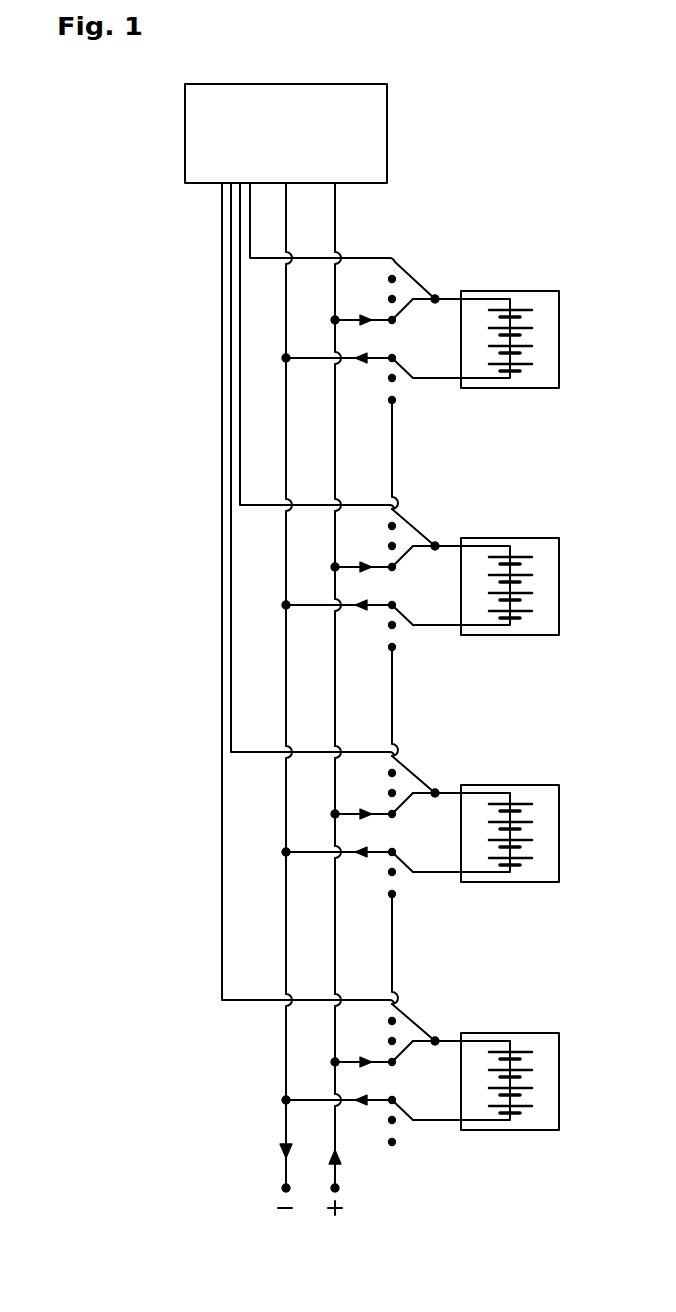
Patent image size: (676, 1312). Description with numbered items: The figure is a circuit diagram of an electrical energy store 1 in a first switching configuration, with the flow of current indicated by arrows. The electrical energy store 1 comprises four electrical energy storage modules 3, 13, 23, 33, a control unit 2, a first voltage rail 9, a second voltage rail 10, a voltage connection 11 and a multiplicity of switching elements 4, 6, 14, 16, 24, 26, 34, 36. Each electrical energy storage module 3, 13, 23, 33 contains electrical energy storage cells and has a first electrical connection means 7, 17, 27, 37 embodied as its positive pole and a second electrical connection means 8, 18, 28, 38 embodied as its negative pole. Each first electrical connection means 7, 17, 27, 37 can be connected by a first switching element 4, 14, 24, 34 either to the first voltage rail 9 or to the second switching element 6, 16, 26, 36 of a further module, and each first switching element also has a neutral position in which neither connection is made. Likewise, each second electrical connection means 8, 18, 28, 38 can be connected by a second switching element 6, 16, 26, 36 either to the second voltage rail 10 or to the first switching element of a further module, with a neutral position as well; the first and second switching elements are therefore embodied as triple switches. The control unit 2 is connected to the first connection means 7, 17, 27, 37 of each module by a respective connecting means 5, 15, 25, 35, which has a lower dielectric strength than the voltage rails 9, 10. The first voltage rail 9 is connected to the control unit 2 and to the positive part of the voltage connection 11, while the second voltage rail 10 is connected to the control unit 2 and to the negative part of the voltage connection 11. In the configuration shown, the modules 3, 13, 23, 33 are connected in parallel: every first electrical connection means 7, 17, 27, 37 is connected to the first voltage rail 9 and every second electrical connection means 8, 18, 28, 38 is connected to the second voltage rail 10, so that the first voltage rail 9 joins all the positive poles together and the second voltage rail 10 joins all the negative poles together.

The electrical energy store 1 is at (413, 71).
The control unit 2 is at (284, 83).
The electrical energy storage module 3 is at (548, 291).
The first switching element 4 is at (426, 276).
The connecting means 5 is at (367, 257).
The second switching element 6 is at (426, 405).
The first electrical connection means 7 is at (443, 298).
The second electrical connection means 8 is at (443, 380).
The first voltage rail 9 is at (335, 1034).
The second voltage rail 10 is at (286, 1080).
The voltage connection 11 is at (240, 1187).
The electrical energy storage module 13 is at (548, 538).
The first switching element 14 is at (426, 523).
The connecting means 15 is at (380, 504).
The second switching element 16 is at (426, 652).
The first electrical connection means 17 is at (443, 545).
The second electrical connection means 18 is at (443, 627).
The electrical energy storage module 23 is at (548, 785).
The first switching element 24 is at (426, 770).
The connecting means 25 is at (380, 751).
The second switching element 26 is at (426, 899).
The first electrical connection means 27 is at (443, 792).
The second electrical connection means 28 is at (443, 874).
The electrical energy storage module 33 is at (548, 1033).
The first switching element 34 is at (426, 1018).
The connecting means 35 is at (380, 999).
The second switching element 36 is at (426, 1147).
The first electrical connection means 37 is at (443, 1040).
The second electrical connection means 38 is at (443, 1122).